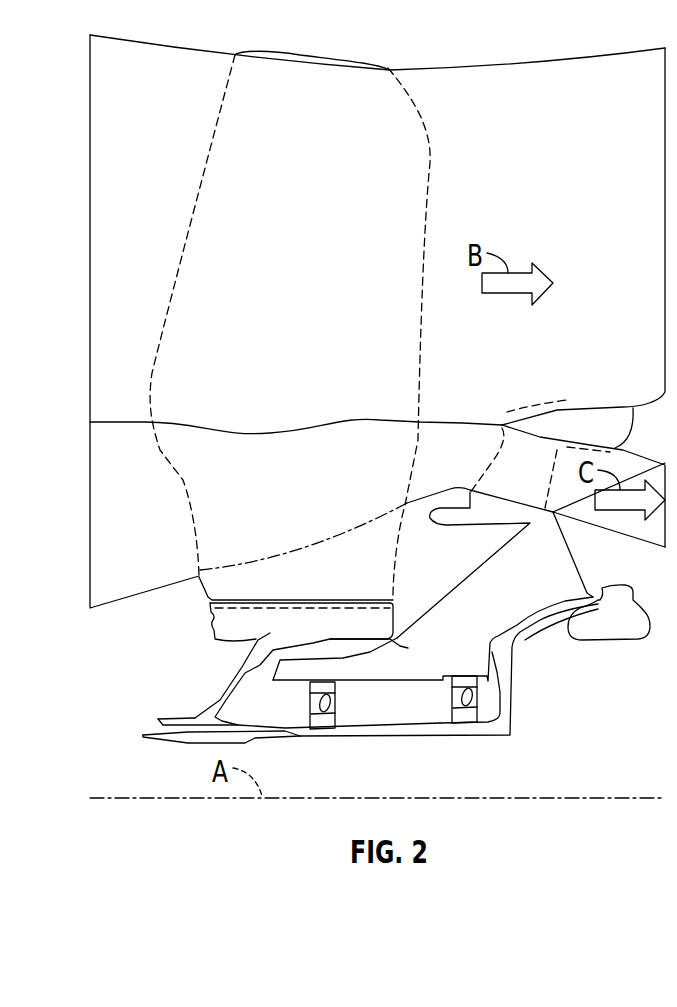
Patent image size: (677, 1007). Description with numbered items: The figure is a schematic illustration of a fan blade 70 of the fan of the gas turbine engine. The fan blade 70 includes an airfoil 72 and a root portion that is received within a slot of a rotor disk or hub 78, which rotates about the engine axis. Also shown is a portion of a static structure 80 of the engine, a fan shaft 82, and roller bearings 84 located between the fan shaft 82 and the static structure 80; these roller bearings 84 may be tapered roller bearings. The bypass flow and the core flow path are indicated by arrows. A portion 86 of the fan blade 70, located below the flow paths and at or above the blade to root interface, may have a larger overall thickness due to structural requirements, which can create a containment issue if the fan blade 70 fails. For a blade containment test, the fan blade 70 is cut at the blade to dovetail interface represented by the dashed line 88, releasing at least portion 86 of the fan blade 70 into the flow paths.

The fan blade 70 is at (140, 375).
The airfoil 72 is at (218, 403).
The hub 78 is at (240, 655).
The static structure 80 is at (460, 640).
The fan shaft 82 is at (527, 638).
The roller bearings 84 is at (320, 722).
The portion of the fan blade 86 is at (403, 555).
The dashed line 88 is at (207, 632).